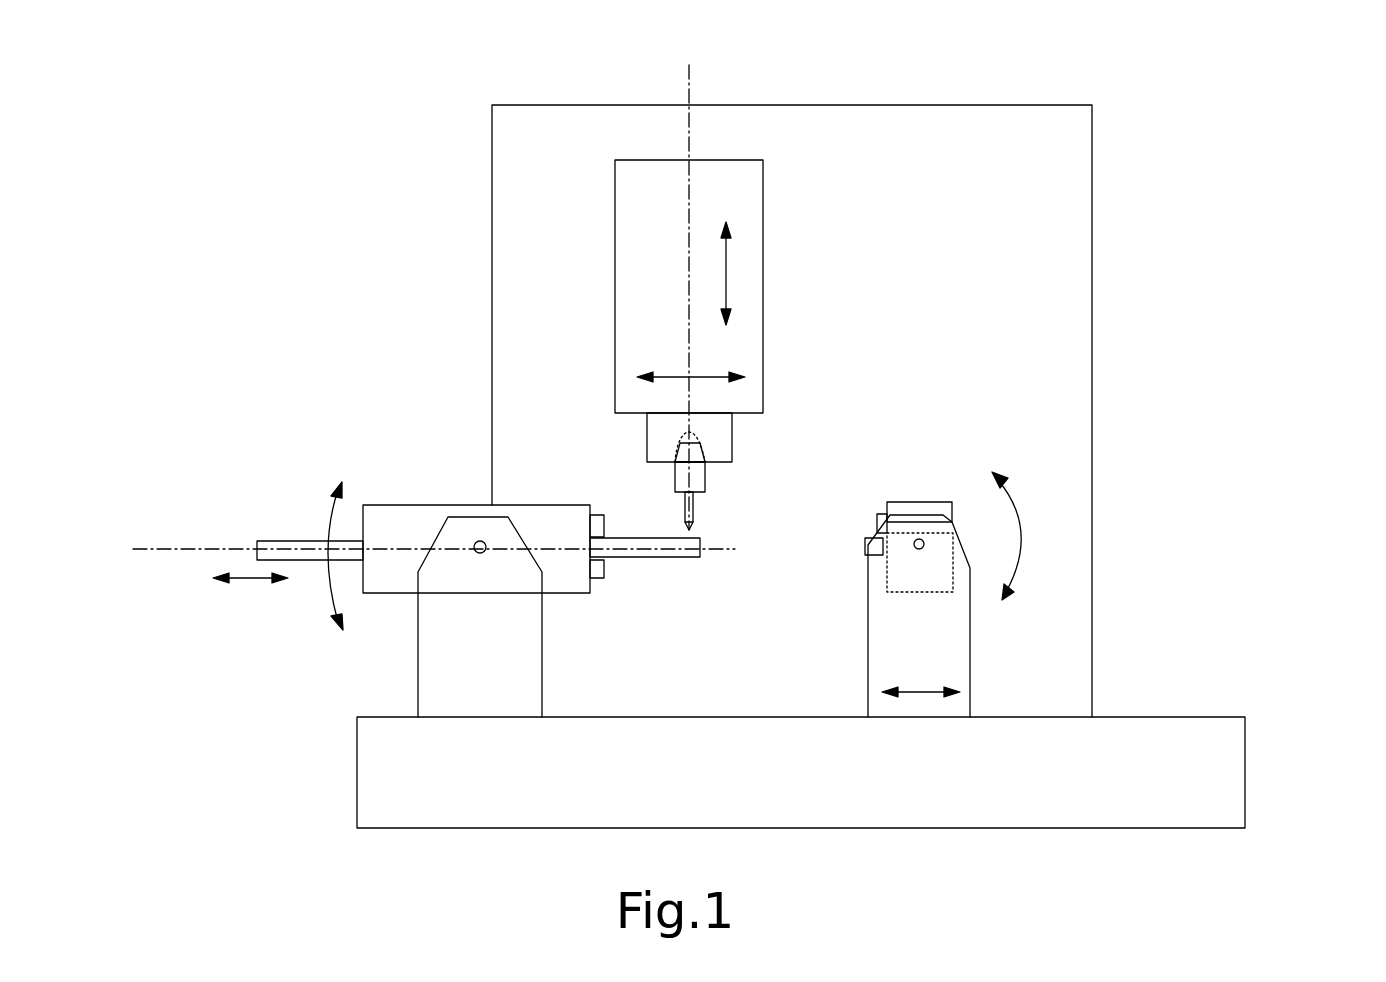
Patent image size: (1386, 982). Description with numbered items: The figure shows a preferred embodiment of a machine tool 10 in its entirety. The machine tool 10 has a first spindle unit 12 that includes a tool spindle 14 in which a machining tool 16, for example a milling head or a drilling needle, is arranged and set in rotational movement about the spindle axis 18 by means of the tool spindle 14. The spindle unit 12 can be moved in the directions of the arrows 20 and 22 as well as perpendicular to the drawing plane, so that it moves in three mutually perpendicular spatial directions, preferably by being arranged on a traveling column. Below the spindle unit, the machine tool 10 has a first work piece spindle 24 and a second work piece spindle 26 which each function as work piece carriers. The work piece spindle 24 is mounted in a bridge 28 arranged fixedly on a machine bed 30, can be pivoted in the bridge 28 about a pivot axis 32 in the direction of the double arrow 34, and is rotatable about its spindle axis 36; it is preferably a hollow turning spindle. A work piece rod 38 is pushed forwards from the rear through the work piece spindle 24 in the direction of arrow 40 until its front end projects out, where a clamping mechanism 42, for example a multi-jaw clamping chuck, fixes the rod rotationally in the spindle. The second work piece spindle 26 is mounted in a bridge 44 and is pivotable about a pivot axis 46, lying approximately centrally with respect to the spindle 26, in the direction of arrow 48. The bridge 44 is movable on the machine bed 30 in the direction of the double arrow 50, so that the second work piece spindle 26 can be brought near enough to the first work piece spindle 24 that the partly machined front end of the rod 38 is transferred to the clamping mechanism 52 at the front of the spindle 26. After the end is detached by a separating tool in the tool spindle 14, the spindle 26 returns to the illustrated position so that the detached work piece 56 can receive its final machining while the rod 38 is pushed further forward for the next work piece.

The machine tool 10 is at (1240, 212).
The first spindle unit 12 is at (763, 200).
The tool spindle 14 is at (733, 440).
The machining tool 16 is at (685, 517).
The spindle axis 18 is at (690, 92).
The arrow 20 is at (728, 263).
The arrow 22 is at (680, 380).
The first work piece spindle 24 is at (430, 505).
The second work piece spindle 26 is at (918, 502).
The bridge 28 is at (527, 682).
The machine bed 30 is at (1063, 805).
The pivot axis 32 is at (483, 553).
The double arrow 34 is at (320, 523).
The spindle axis 36 is at (143, 553).
The work piece rod 38 is at (273, 540).
The arrow 40 is at (254, 578).
The clamping mechanism 42 is at (604, 575).
The bridge 44 is at (965, 657).
The pivot axis 46 is at (922, 550).
The arrow 48 is at (1035, 528).
The double arrow 50 is at (926, 692).
The clamping mechanism 52 is at (877, 520).
The work piece 56 is at (865, 548).